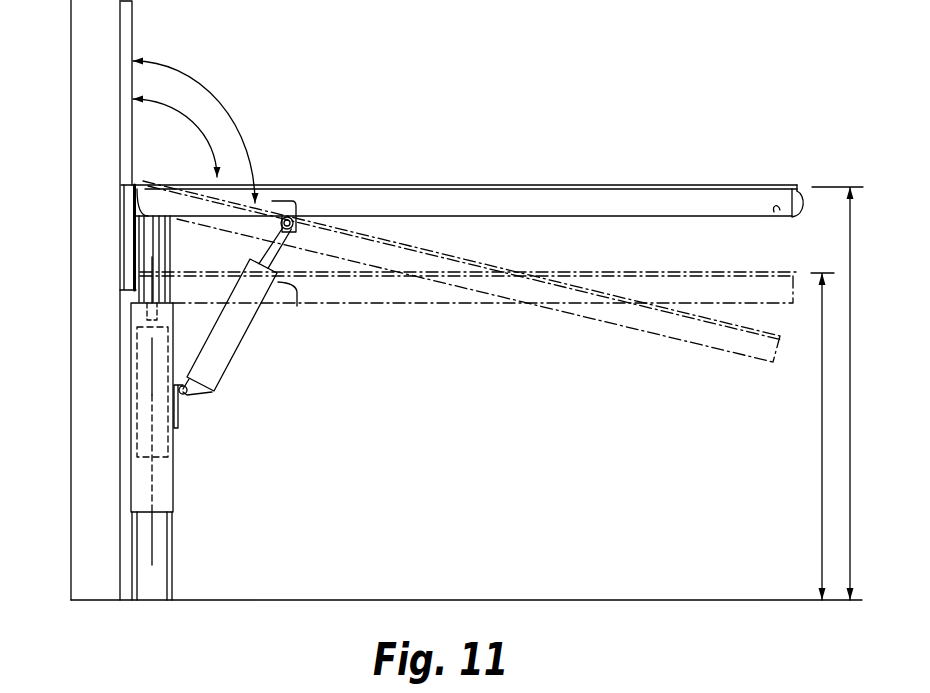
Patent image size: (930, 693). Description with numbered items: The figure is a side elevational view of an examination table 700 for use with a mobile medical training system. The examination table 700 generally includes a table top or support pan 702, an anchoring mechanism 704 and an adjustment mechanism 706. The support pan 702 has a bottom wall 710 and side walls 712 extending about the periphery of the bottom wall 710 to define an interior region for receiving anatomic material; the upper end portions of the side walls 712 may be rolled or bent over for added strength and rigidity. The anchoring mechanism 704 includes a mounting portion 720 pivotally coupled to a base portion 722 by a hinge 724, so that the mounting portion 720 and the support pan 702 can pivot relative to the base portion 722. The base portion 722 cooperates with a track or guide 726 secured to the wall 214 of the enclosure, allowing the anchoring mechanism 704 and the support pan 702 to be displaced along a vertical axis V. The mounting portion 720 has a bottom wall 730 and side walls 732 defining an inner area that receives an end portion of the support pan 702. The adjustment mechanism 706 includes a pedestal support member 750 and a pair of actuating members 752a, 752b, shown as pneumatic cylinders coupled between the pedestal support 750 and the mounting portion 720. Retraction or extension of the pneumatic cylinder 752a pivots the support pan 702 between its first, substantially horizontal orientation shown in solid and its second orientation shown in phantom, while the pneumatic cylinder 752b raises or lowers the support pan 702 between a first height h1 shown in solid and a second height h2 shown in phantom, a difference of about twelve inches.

The examination table 700 is at (651, 107).
The support pan 702 is at (462, 183).
The anchoring mechanism 704 is at (282, 179).
The adjustment mechanism 706 is at (258, 341).
The bottom wall 710 is at (553, 217).
The side walls 712 is at (776, 212).
The mounting portion 720 is at (286, 196).
The base portion 722 is at (122, 140).
The hinge 724 is at (129, 178).
The track or guide 726 is at (117, 241).
The bottom wall 730 is at (187, 218).
The side walls 732 is at (298, 203).
The pedestal support member 750 is at (179, 572).
The pneumatic cylinder 752a is at (237, 368).
The pneumatic cylinder 752b is at (130, 395).
The wall 214 is at (68, 165).
The vertical axis V is at (152, 480).
The first height h1 is at (848, 380).
The second height h2 is at (820, 480).